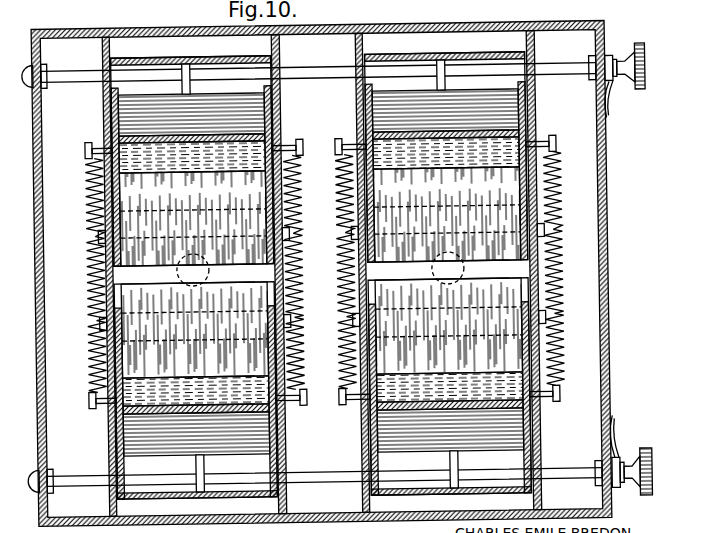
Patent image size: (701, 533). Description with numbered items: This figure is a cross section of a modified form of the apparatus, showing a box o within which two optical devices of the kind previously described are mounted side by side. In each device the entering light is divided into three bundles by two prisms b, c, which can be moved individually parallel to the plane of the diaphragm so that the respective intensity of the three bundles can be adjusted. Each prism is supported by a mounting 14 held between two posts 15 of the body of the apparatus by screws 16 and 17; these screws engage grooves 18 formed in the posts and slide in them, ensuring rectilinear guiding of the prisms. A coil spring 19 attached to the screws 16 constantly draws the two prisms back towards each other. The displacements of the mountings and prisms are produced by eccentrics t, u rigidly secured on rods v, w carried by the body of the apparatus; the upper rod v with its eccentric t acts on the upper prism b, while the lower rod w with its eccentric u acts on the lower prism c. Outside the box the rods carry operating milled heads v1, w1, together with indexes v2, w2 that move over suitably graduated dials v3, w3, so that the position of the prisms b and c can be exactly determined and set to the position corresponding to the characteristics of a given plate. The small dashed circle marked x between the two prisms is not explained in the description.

The box o is at (35, 374).
The posts 15 is at (106, 50).
The mountings 14 is at (114, 98).
The screws 16 is at (87, 145).
The screws 17 is at (99, 234).
The grooves 18 is at (112, 123).
The coil spring 19 is at (90, 278).
The prism b is at (320, 198).
The prism c is at (322, 346).
The eccentric t is at (186, 64).
The eccentric u is at (211, 497).
The rod v is at (322, 79).
The rod w is at (321, 472).
The milled head v1 is at (640, 47).
The index v2 is at (612, 105).
The graduated dial v3 is at (610, 122).
The milled head w1 is at (640, 497).
The index w2 is at (614, 441).
The graduated dial w3 is at (614, 422).
The pivot x is at (177, 270).